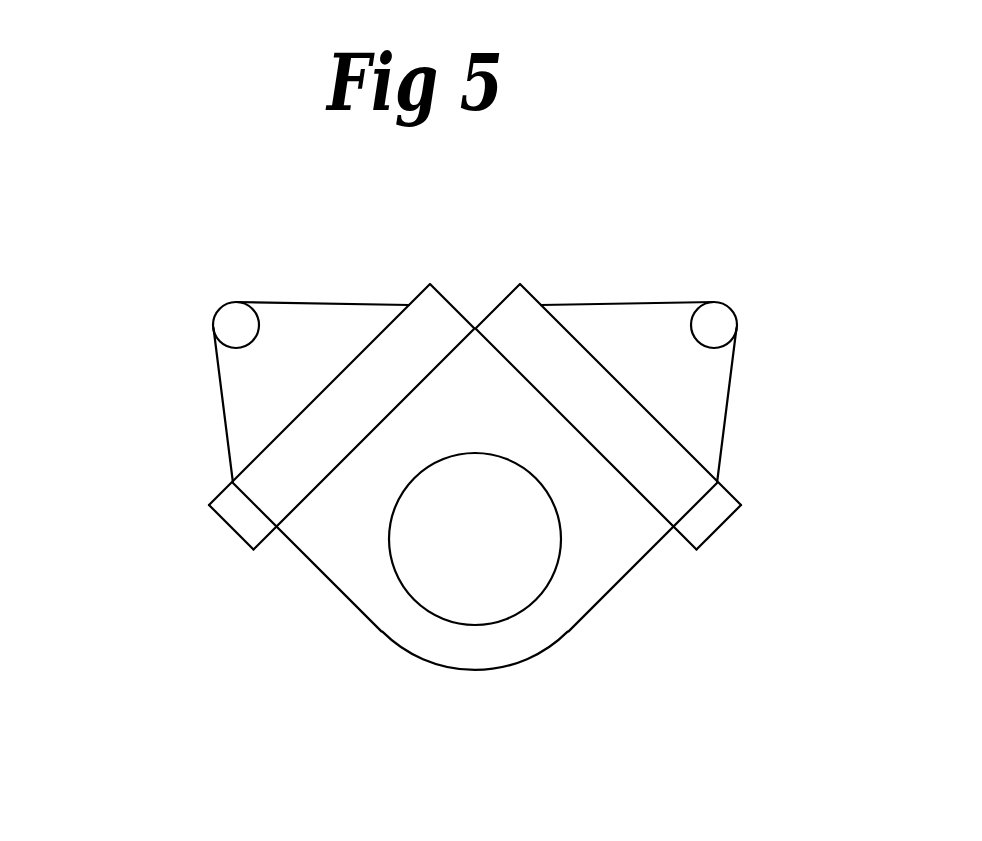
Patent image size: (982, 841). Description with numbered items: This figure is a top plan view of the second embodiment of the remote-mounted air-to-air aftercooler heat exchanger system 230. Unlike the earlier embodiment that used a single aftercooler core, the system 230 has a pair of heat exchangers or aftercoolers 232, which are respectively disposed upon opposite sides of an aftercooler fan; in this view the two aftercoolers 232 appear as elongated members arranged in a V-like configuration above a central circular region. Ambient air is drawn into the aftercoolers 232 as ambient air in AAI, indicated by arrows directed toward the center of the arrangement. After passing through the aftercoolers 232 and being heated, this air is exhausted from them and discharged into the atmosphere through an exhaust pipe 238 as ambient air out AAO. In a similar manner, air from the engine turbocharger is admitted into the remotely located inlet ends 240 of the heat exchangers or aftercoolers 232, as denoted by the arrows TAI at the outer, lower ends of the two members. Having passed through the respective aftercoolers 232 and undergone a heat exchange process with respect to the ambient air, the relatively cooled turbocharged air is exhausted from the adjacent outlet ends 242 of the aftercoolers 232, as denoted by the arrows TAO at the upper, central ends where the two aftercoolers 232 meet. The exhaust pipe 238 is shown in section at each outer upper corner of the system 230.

The remote-mounted air-to-air aftercooler heat exchanger system 230 is at (651, 266).
The heat exchangers or aftercoolers 232 is at (575, 407).
The exhaust pipe 238 is at (227, 301).
The inlet ends 240 is at (230, 499).
The outlet ends 242 is at (430, 303).
The turbocharged air out TAO is at (454, 299).
The turbocharged air in TAI is at (228, 525).
The ambient air out AAO is at (262, 402).
The ambient air in AAI is at (412, 602).